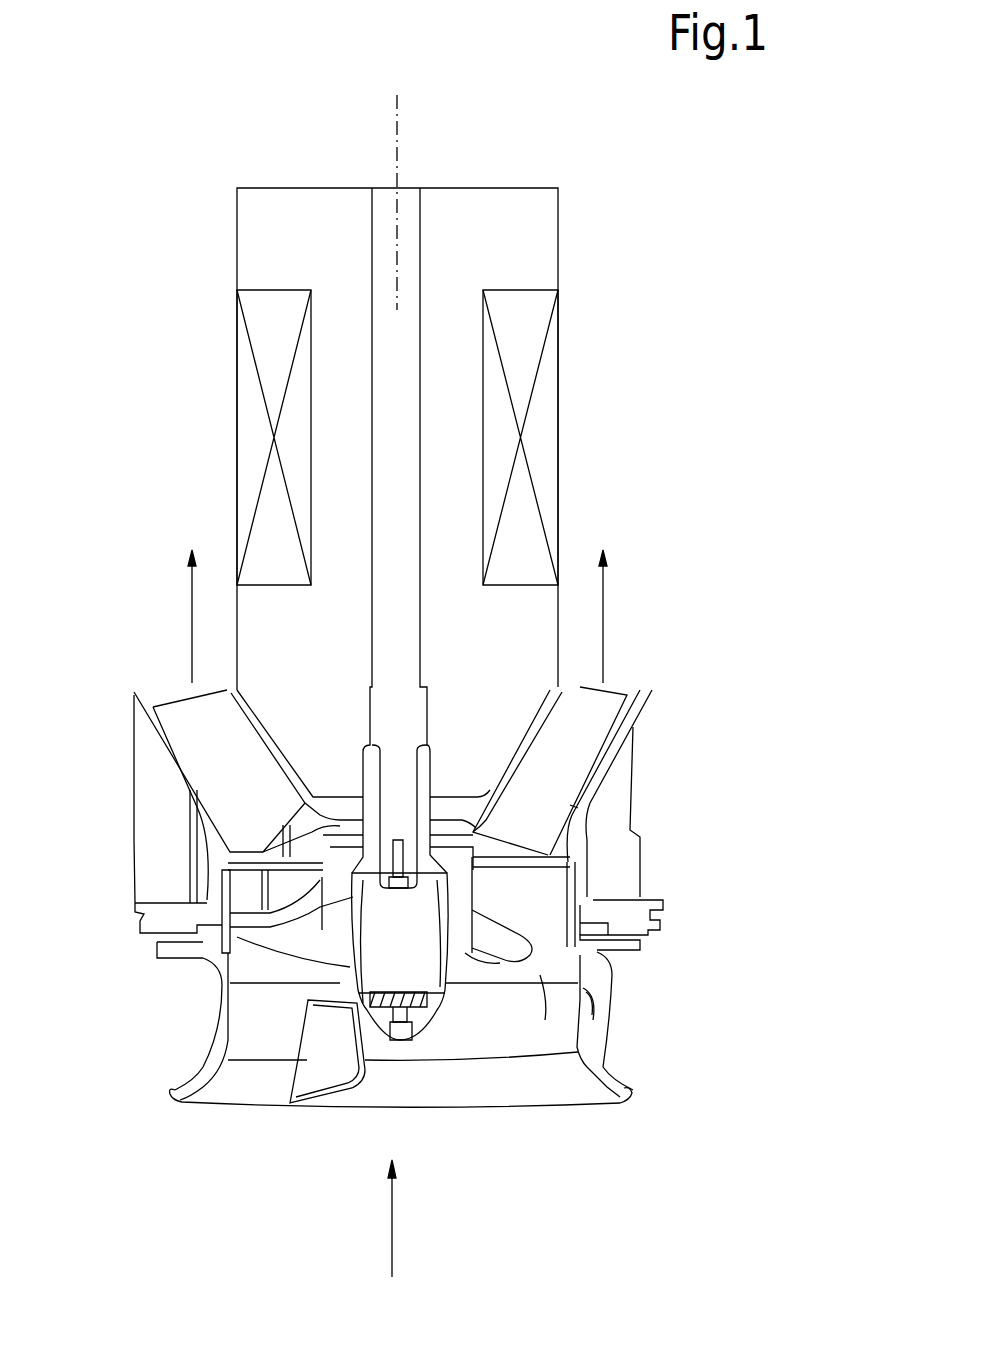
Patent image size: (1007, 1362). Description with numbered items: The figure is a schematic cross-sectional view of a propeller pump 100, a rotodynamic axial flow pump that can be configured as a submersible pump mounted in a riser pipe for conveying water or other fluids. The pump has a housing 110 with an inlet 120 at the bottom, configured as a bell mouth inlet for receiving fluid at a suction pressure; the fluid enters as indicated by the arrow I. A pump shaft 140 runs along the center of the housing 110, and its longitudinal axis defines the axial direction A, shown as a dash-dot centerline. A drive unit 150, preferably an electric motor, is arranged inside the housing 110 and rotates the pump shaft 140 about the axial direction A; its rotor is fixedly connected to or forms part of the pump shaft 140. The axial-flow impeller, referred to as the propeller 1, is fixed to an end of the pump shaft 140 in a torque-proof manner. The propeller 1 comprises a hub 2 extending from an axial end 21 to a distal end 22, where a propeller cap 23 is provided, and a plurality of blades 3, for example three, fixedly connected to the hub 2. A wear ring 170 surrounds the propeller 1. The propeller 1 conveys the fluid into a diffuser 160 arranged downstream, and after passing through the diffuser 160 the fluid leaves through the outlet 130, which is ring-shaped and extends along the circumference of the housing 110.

The propeller pump 100 is at (673, 171).
The housing 110 is at (521, 188).
The inlet 120 is at (170, 1093).
The outlet 130 is at (628, 697).
The pump shaft 140 is at (422, 278).
The drive unit 150 is at (560, 415).
The diffuser 160 is at (620, 760).
The wear ring 170 is at (553, 918).
The propeller 1 is at (453, 998).
The hub 2 is at (340, 948).
The blades 3 is at (493, 967).
The axial end 21 is at (335, 845).
The distal end 22 is at (350, 1013).
The propeller cap 23 is at (422, 1040).
The axial direction A is at (399, 134).
The arrow indicating fluid entry I is at (392, 1237).